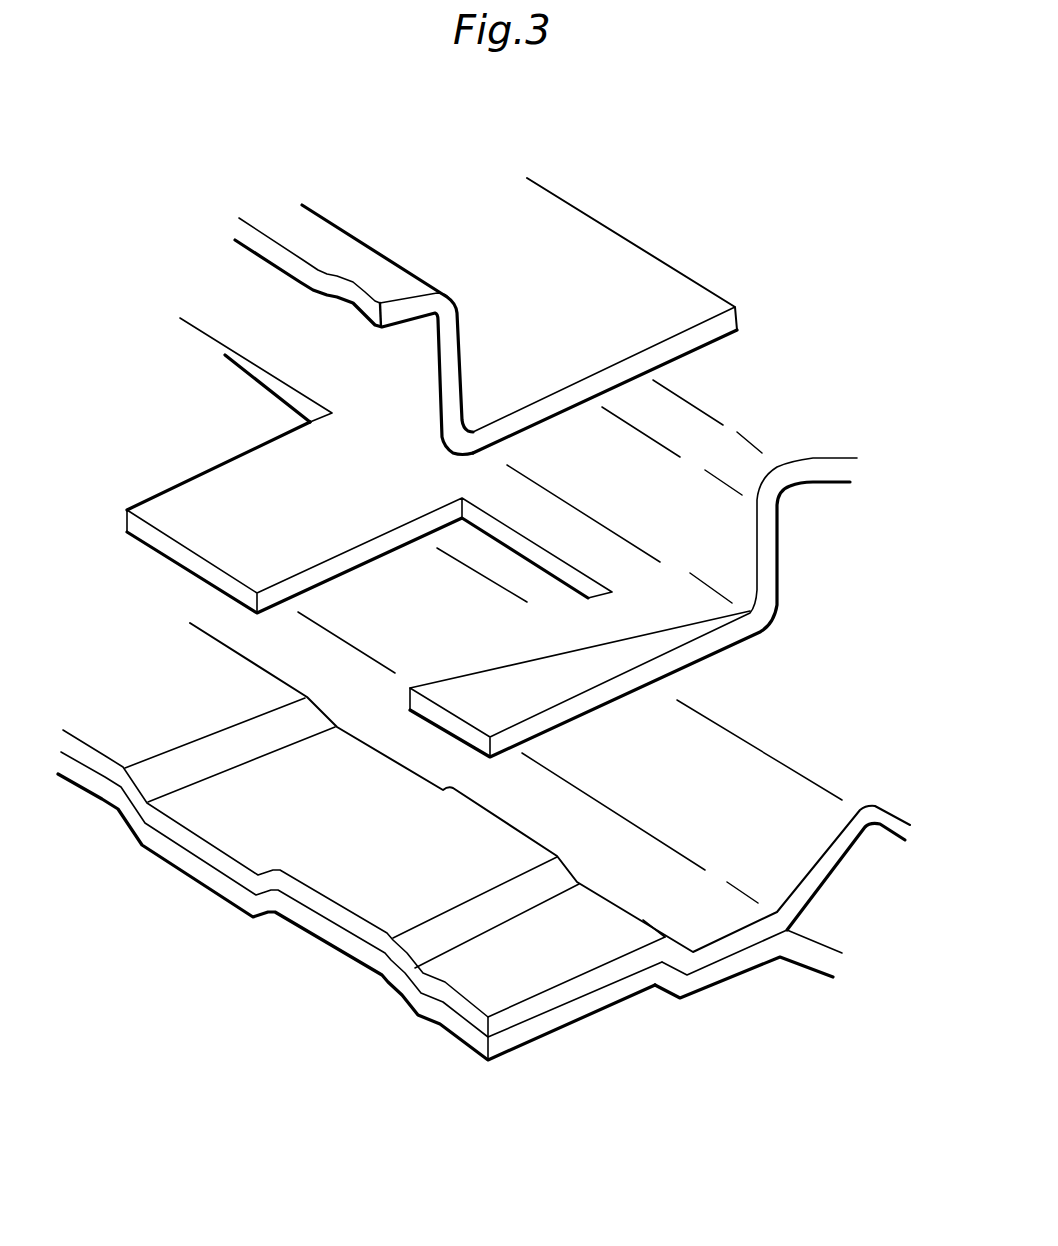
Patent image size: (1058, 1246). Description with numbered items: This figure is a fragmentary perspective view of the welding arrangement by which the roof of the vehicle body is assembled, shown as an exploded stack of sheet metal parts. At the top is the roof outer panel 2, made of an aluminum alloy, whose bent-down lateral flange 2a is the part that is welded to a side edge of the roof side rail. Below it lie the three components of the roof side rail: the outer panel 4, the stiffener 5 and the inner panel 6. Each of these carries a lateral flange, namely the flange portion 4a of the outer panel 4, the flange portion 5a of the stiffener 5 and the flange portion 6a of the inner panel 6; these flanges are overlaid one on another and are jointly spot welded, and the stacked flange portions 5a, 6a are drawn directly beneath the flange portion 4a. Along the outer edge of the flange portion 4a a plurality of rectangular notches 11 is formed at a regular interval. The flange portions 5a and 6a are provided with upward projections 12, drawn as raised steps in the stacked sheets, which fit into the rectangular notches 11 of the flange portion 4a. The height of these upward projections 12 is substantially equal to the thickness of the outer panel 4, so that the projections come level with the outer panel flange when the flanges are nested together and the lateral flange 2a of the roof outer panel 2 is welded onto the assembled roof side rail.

The roof outer panel 2 is at (320, 237).
The lateral flange of roof outer panel 2a is at (633, 263).
The outer panel 4 is at (815, 470).
The flange portion of outer panel 4a is at (153, 540).
The stiffener 5 is at (878, 818).
The flange portion of stiffener 5a is at (427, 992).
The inner panel 6 is at (803, 957).
The flange portion of inner panel 6a is at (447, 1023).
The rectangular notches 11 is at (207, 347).
The upward projections 12 is at (135, 695).